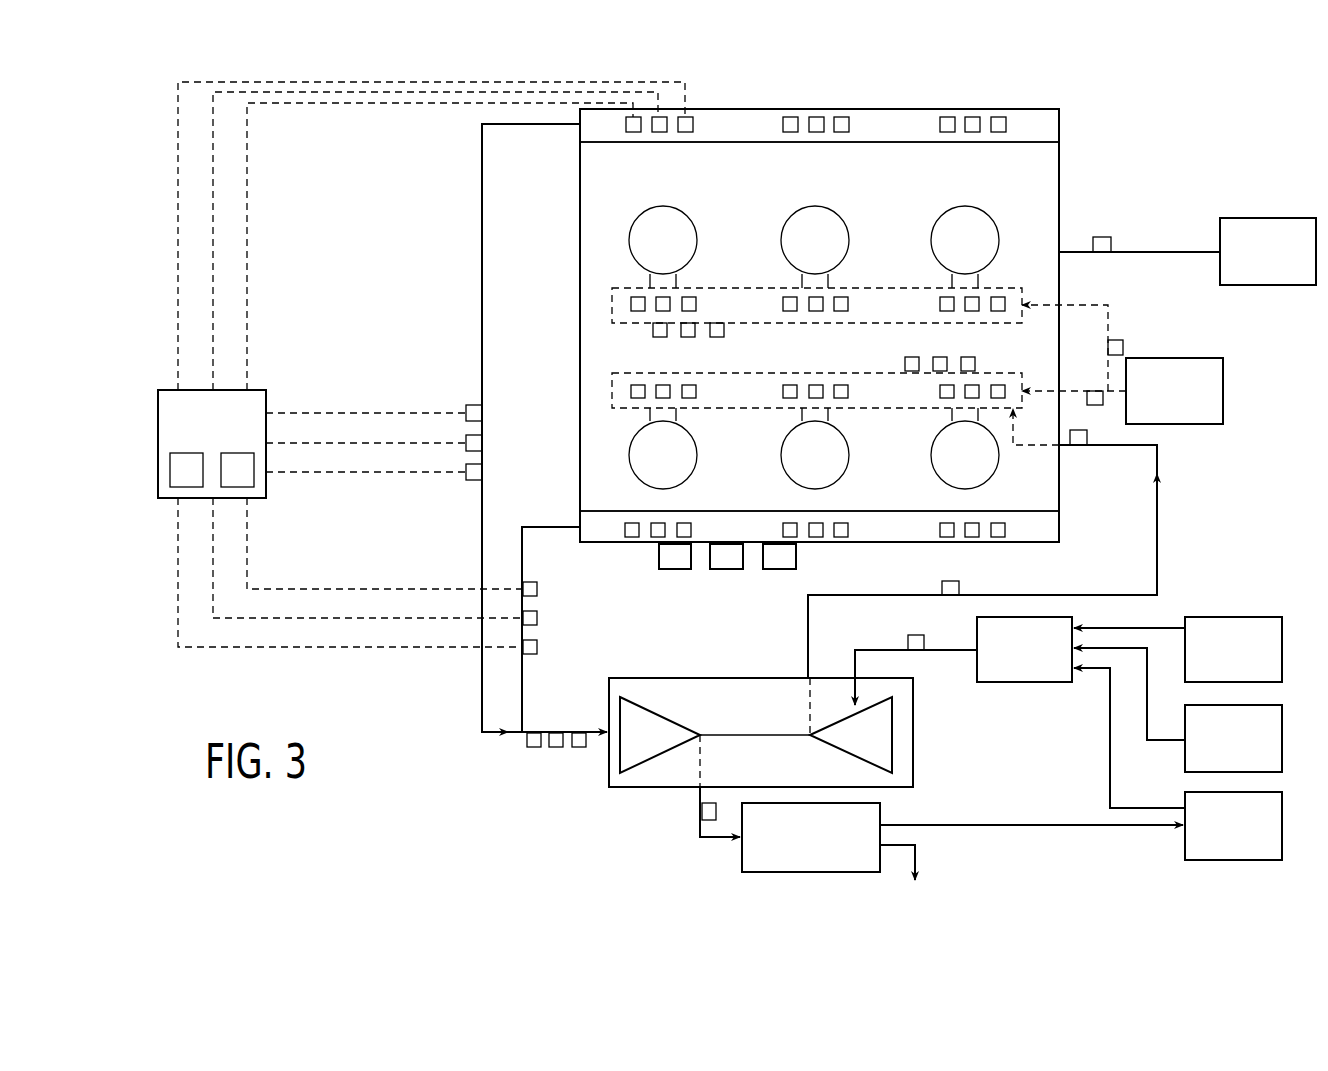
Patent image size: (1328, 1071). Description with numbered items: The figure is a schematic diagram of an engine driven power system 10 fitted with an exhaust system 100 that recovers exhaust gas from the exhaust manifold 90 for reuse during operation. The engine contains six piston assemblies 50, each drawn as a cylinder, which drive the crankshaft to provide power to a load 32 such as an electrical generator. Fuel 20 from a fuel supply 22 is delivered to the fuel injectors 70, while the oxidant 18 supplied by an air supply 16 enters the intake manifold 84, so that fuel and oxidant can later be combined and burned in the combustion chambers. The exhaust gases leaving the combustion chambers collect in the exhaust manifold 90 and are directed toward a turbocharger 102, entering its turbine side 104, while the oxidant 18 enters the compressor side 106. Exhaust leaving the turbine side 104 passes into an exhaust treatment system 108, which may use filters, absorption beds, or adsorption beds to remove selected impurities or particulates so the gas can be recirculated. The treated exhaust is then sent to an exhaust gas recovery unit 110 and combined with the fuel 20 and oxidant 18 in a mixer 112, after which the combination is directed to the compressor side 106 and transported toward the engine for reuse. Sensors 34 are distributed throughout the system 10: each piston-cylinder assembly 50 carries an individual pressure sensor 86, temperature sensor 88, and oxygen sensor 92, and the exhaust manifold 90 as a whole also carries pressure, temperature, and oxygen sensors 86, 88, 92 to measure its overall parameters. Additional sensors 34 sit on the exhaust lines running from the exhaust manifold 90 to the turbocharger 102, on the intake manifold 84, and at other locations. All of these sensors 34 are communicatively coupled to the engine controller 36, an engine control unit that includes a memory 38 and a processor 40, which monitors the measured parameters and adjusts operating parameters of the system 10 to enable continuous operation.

The engine driven power generation system 10 is at (1099, 111).
The air supply 16 is at (1282, 650).
The oxidant 18 is at (1160, 540).
The fuel 20 is at (1147, 693).
The fuel supply 22 is at (1223, 390).
The load 32 is at (1267, 218).
The sensor 34 is at (709, 121).
The engine controller 36 is at (262, 390).
The memory 38 is at (170, 470).
The processor 40 is at (254, 470).
The piston assembly 50 is at (768, 243).
The fuel injector 70 is at (677, 279).
The intake manifold 84 is at (1000, 327).
The pressure sensor 86 is at (633, 132).
The temperature sensor 88 is at (660, 132).
The exhaust manifold 90 is at (1059, 124).
The oxygen sensor 92 is at (693, 122).
The exhaust system 100 is at (565, 829).
The turbocharger 102 is at (655, 678).
The turbine side 104 is at (586, 767).
The compressor side 106 is at (927, 720).
The exhaust treatment system 108 is at (742, 848).
The exhaust gas recovery unit 110 is at (1282, 825).
The mixer 112 is at (1025, 682).